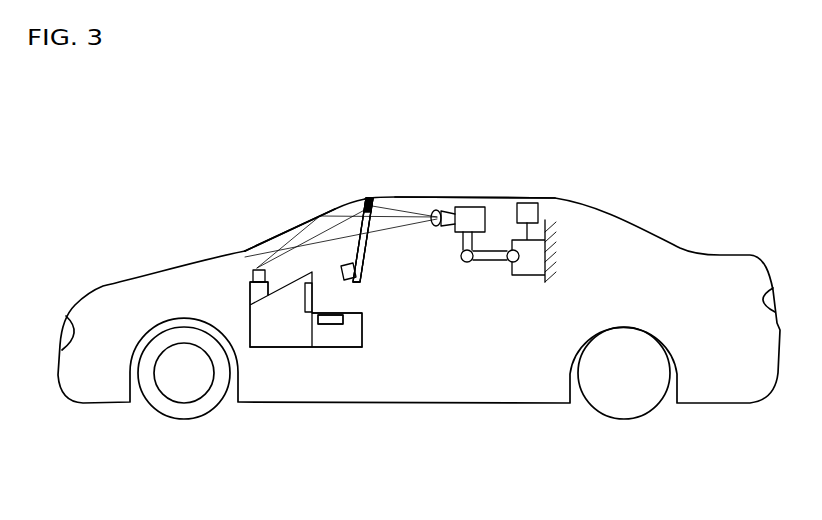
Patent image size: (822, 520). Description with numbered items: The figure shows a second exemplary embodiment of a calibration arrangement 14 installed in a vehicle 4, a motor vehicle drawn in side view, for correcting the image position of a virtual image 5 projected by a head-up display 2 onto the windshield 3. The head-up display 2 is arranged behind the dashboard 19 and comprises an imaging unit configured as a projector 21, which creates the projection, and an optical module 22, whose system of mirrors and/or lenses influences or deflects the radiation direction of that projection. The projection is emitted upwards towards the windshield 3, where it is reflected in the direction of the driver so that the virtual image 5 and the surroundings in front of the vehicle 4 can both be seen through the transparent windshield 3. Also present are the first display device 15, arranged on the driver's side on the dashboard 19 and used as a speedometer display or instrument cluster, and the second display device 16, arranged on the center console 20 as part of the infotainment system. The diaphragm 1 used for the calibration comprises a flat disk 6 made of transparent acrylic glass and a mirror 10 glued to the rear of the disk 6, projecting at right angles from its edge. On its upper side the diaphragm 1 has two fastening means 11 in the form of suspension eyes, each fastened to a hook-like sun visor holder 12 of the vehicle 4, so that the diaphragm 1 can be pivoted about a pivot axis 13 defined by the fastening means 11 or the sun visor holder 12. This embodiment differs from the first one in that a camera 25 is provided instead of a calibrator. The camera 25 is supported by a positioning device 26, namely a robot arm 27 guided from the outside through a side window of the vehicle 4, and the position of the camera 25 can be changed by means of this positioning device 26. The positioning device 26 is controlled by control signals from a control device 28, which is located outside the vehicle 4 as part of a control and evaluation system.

The diaphragm 1 is at (378, 213).
The head-up display 2 is at (235, 292).
The windshield 3 is at (297, 227).
The vehicle 4 is at (665, 198).
The virtual image 5 is at (278, 235).
The disk 6 is at (357, 271).
The mirror 10 is at (331, 307).
The fastening means 11 is at (372, 197).
The sun visor holder 12 is at (372, 197).
The pivot axis 13 is at (366, 195).
The calibration arrangement 14 is at (467, 162).
The first display device 15 is at (302, 312).
The second display device 16 is at (337, 325).
The dashboard 19 is at (265, 348).
The center console 20 is at (359, 318).
The projector 21 is at (250, 293).
The optical module 22 is at (256, 270).
The camera 25 is at (470, 207).
The positioning device 26 is at (465, 268).
The robot arm 27 is at (490, 261).
The control device 28 is at (529, 203).